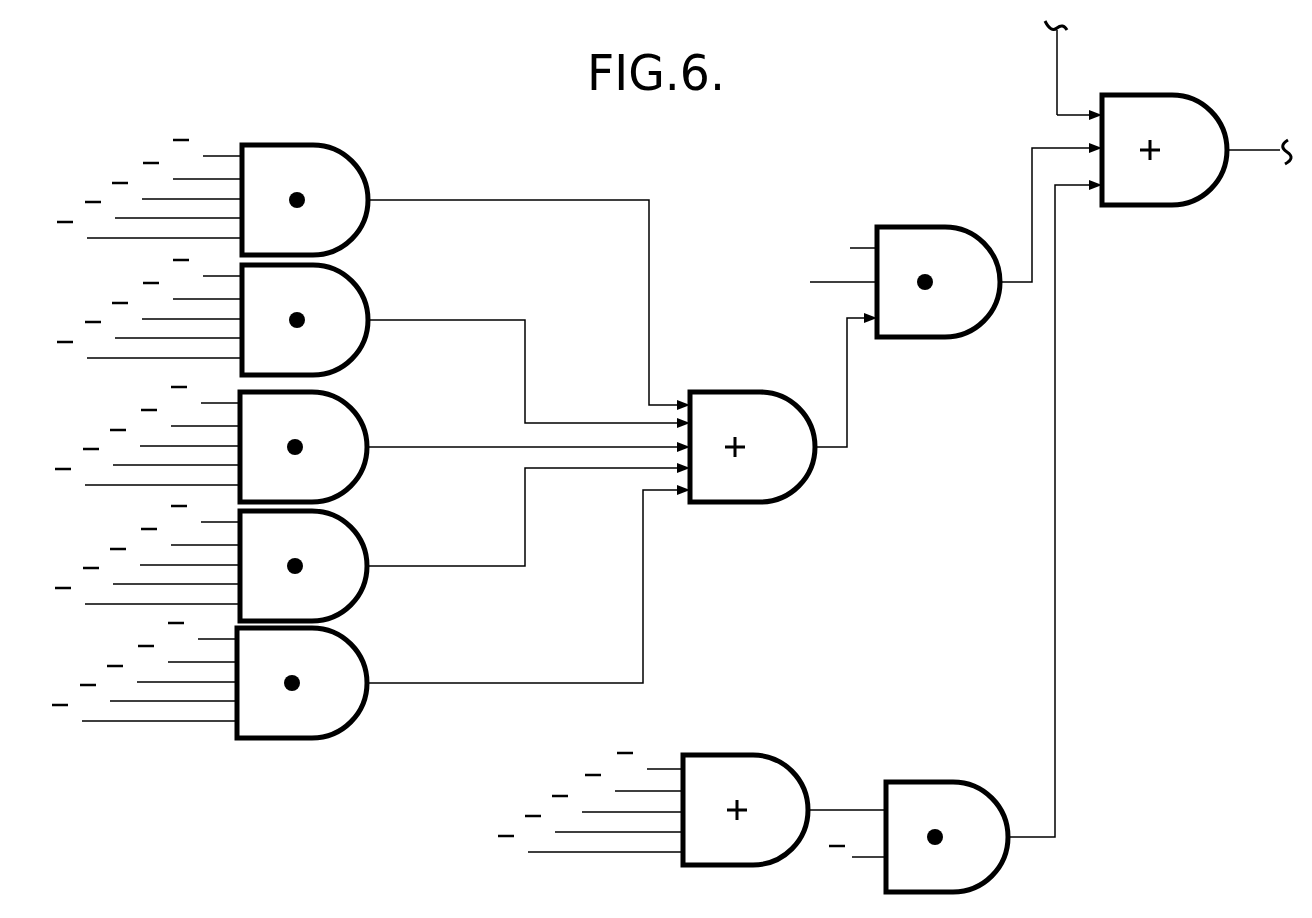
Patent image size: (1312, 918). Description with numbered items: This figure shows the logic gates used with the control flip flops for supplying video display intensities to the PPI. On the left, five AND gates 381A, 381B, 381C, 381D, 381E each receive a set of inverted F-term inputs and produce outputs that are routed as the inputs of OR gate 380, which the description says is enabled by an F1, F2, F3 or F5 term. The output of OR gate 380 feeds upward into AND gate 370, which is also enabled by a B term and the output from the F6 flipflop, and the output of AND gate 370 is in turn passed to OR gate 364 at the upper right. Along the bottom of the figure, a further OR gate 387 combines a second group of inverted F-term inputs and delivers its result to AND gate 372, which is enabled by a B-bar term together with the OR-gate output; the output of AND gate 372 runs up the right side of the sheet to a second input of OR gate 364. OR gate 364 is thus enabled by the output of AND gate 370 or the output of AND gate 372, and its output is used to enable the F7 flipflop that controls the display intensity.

The AND gate 381A is at (356, 161).
The AND gate 381B is at (356, 283).
The AND gate 381C is at (355, 410).
The AND gate 381D is at (355, 530).
The AND gate 381E is at (355, 648).
The OR gate 380 is at (791, 494).
The AND gate 370 is at (984, 324).
The OR gate 364 is at (1215, 190).
The OR gate 387 is at (802, 782).
The AND gate 372 is at (955, 782).